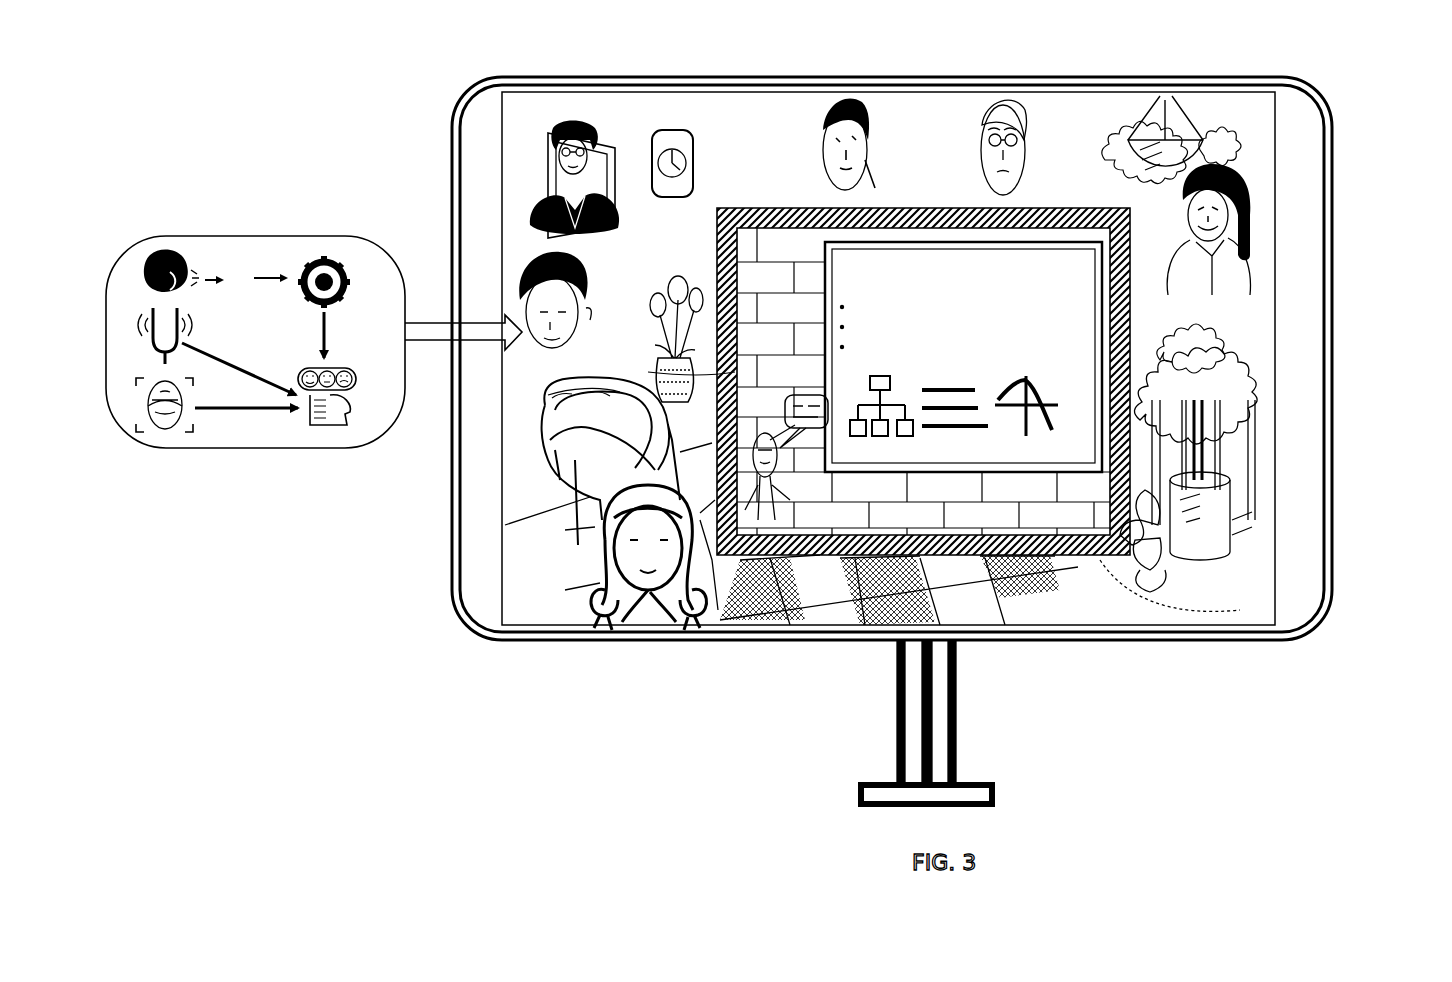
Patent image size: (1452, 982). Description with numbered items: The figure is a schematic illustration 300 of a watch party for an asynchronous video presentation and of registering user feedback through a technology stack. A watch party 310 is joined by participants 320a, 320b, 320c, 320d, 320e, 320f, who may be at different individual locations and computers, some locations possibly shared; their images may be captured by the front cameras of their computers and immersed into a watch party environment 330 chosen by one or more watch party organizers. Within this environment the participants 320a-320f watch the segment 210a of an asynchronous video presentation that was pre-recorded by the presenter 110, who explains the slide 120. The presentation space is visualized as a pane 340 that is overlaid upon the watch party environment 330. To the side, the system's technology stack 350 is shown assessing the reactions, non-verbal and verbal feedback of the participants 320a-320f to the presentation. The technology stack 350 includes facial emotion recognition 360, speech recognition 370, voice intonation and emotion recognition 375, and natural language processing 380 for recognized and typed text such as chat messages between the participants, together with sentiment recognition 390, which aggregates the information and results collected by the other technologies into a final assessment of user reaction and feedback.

The schematic illustration 300 is at (1433, 118).
The watch party 310 is at (458, 152).
The watch party environment 330 is at (888, 358).
The technology stack 350 is at (253, 236).
The facial emotion recognition 360 is at (162, 436).
The speech recognition 370 is at (158, 250).
The voice intonation and emotion recognition 375 is at (152, 325).
The natural language processing 380 is at (322, 258).
The sentiment recognition 390 is at (320, 428).
The participant 320a is at (640, 590).
The participant 320b is at (535, 365).
The participant 320c is at (555, 170).
The participant 320d is at (868, 143).
The participant 320e is at (1035, 137).
The participant 320f is at (1250, 222).
The pane 340 is at (1088, 555).
The presenter 110 is at (760, 518).
The slide 120 is at (963, 357).
The segment 210a is at (912, 510).